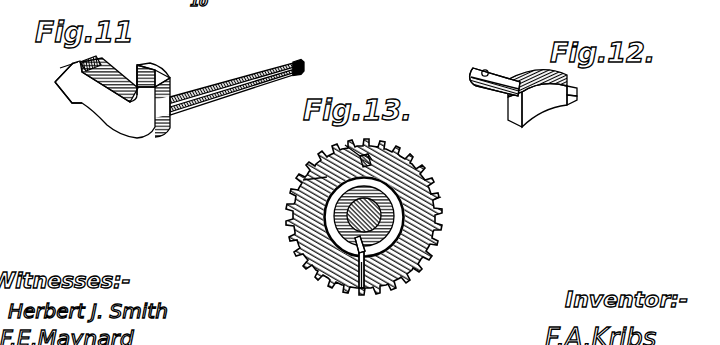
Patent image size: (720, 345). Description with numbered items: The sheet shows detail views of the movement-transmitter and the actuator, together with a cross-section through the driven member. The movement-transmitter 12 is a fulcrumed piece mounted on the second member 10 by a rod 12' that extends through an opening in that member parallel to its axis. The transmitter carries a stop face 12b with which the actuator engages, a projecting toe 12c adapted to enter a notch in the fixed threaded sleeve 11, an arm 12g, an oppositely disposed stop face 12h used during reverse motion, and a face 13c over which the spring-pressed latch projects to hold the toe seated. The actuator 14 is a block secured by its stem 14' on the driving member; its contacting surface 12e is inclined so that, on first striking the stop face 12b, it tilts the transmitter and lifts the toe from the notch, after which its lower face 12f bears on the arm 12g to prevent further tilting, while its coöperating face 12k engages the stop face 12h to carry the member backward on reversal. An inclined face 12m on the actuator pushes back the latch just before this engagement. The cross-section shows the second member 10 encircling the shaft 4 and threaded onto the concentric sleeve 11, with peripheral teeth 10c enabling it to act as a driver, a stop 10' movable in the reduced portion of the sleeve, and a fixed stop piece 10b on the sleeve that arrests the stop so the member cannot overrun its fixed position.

In FIG. 13, the shaft 4 is at (326, 213).
In FIG. 13, the second member 10 is at (379, 217).
In FIG. 13, the stop 10' is at (389, 272).
In FIG. 13, the fixed stop piece 10b is at (309, 257).
In FIG. 13, the teeth 10c is at (432, 195).
In FIG. 13, the threaded sleeve 11 is at (304, 181).
In FIG. 11, the movement-transmitter 12 is at (162, 88).
In FIG. 11, the rod 12' is at (271, 92).
In FIG. 13, the rod 12' is at (332, 147).
In FIG. 11, the stop face 12b is at (137, 71).
In FIG. 11, the projecting toe 12c is at (67, 100).
In FIG. 12, the contacting surface 12e is at (517, 117).
In FIG. 12, the lower face 12f is at (545, 110).
In FIG. 11, the arm 12g is at (107, 71).
In FIG. 11, the stop face 12h is at (64, 69).
In FIG. 12, the coöperating face 12k is at (577, 102).
In FIG. 12, the inclined face 12m is at (573, 92).
In FIG. 11, the face 13c is at (82, 63).
In FIG. 12, the actuator 14 is at (518, 71).
In FIG. 12, the stem 14' is at (474, 59).